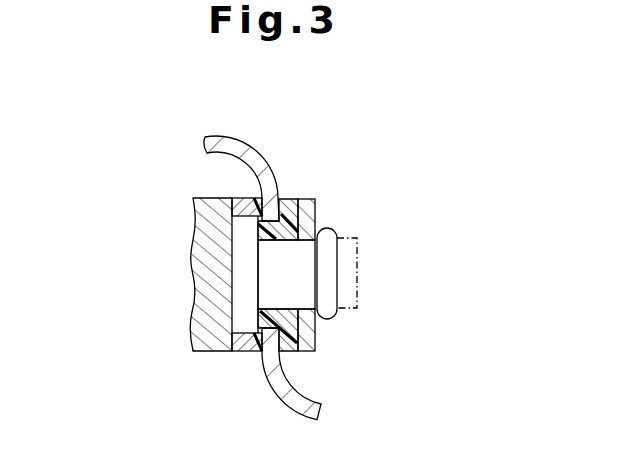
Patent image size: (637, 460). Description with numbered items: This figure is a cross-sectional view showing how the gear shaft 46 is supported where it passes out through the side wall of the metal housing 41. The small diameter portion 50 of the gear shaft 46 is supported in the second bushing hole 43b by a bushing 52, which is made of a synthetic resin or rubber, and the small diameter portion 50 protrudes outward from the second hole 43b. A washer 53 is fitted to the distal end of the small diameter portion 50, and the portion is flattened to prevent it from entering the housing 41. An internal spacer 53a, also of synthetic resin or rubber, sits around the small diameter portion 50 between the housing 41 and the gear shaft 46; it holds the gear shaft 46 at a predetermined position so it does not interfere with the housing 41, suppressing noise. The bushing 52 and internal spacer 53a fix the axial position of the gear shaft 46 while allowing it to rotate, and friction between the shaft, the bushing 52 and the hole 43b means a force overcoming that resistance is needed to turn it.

The housing 41 is at (239, 131).
The second bushing hole 43b is at (281, 320).
The gear shaft 46 is at (208, 265).
The small diameter portion 50 is at (319, 312).
The bushing 52 is at (281, 199).
The washer 53 is at (317, 217).
The internal spacer 53a is at (250, 352).